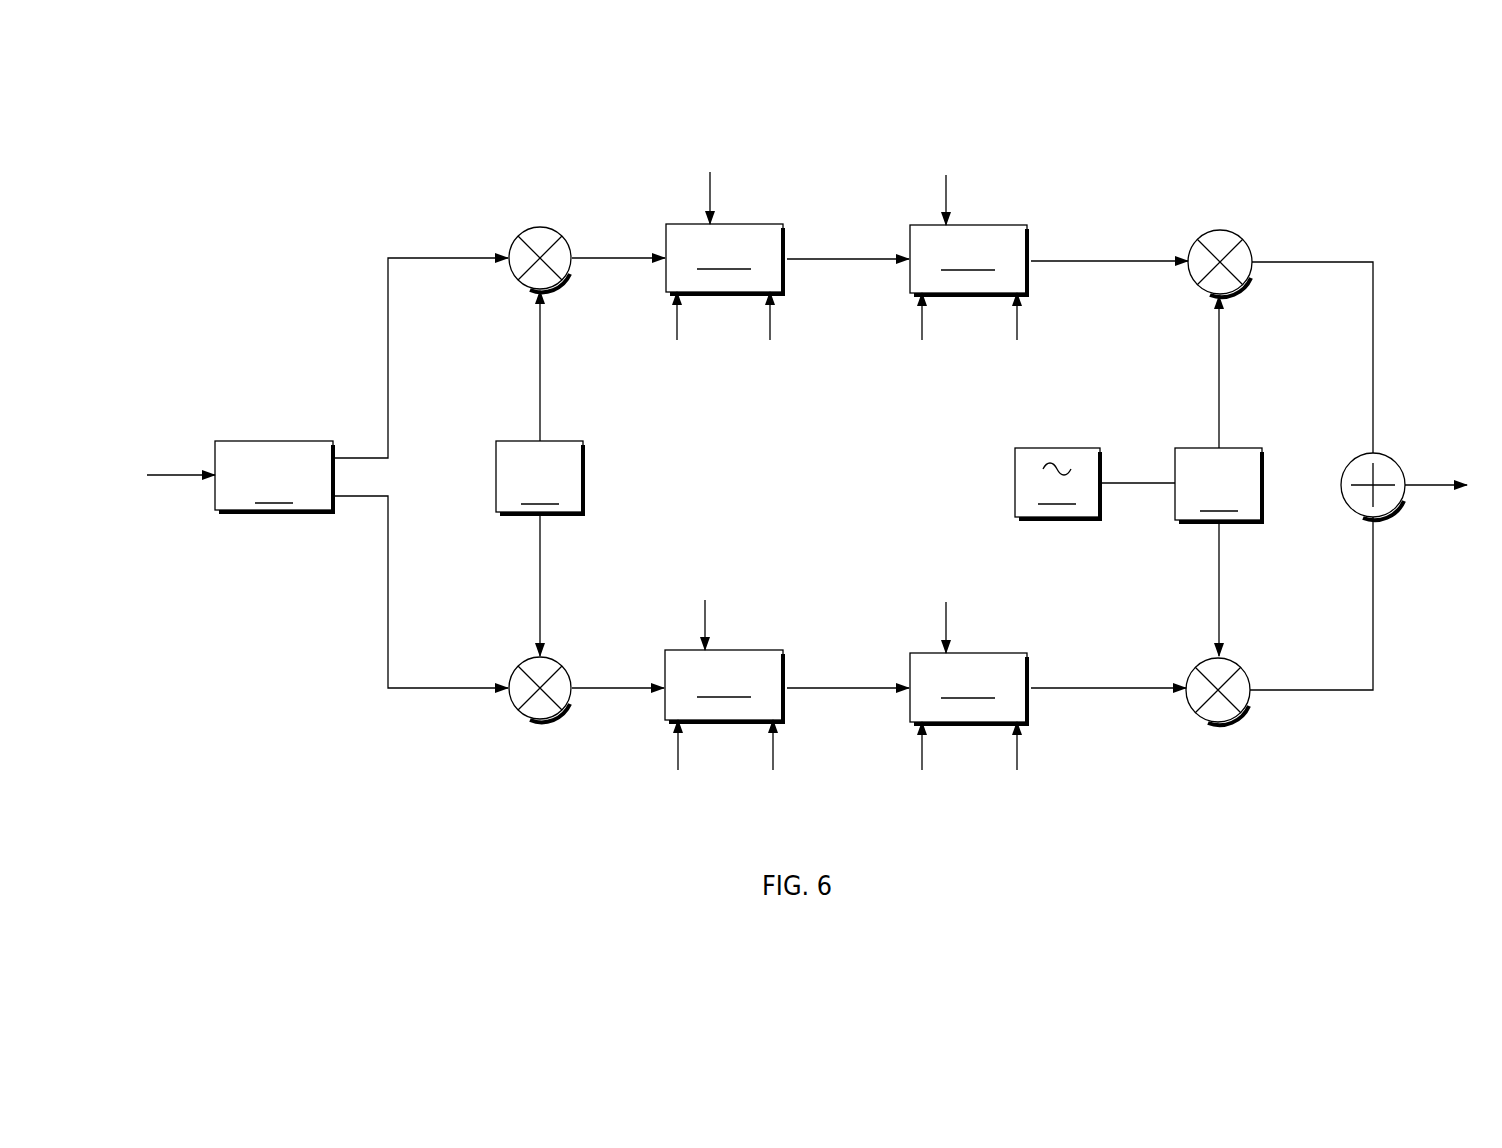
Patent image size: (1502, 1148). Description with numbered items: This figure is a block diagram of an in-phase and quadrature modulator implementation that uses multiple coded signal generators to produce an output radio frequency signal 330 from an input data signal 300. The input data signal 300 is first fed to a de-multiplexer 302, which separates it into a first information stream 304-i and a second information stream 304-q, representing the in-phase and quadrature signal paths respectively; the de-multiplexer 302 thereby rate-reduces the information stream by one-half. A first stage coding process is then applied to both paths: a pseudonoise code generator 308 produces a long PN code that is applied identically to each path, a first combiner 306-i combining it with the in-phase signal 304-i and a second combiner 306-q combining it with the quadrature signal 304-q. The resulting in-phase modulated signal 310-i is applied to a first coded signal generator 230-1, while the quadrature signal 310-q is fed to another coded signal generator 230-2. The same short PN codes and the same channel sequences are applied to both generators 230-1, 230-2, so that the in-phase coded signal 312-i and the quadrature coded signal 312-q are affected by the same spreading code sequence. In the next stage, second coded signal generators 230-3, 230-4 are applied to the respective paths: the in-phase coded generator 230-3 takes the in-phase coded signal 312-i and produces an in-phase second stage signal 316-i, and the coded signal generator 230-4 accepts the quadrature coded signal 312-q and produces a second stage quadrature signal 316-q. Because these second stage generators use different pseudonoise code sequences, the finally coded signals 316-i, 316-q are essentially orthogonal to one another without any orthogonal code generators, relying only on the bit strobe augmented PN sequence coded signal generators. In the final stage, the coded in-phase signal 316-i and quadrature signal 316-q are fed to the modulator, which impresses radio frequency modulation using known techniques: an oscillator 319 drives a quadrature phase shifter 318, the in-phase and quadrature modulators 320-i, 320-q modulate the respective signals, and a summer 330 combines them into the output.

The input data signal 300 is at (172, 475).
The de-multiplexer 302 is at (275, 476).
The first information stream 304-i is at (450, 252).
The second information stream 304-q is at (456, 690).
The first combiner 306-i is at (544, 227).
The second combiner 306-q is at (541, 720).
The pseudonoise code generator 308 is at (540, 473).
The in-phase modulated signal 310-i is at (577, 262).
The quadrature signal 310-q is at (577, 683).
The first coded signal generator 230-1 is at (743, 260).
The coded signal generator 230-2 is at (747, 687).
The in-phase coded generator 230-3 is at (990, 260).
The coded signal generator 230-4 is at (993, 688).
The in-phase coded signal 312-i is at (800, 262).
The quadrature coded signal 312-q is at (800, 692).
The in-phase second stage signal 316-i is at (1065, 258).
The second stage quadrature signal 316-q is at (1072, 692).
The quadrature phase shifter 318 is at (1219, 476).
The oscillator 319 is at (1095, 483).
The in-phase modulator 320-i is at (1247, 243).
The quadrature modulator 320-q is at (1226, 722).
The summer 330 is at (1395, 510).